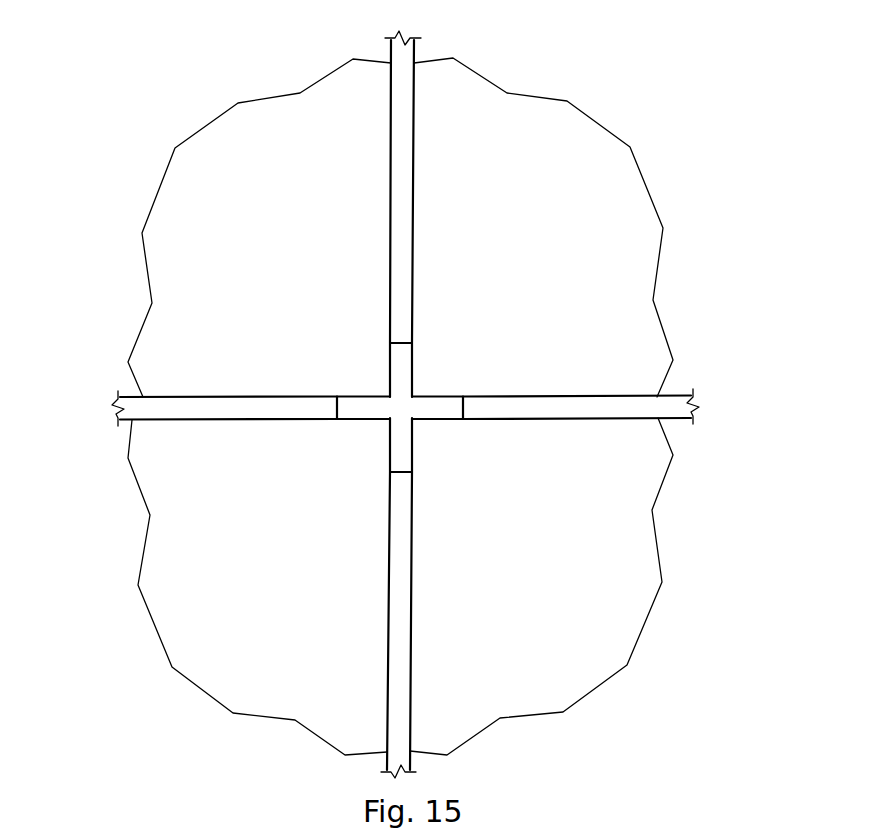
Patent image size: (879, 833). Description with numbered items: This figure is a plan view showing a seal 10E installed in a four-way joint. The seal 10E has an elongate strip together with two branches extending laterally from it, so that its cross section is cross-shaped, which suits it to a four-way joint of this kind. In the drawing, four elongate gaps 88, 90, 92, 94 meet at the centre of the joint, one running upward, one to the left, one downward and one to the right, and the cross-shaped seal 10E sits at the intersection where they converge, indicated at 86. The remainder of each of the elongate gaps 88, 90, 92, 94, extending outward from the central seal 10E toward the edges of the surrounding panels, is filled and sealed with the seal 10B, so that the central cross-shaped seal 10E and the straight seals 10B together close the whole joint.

The seal 10B is at (423, 238).
The seal 10E is at (432, 438).
The central hub of connector 86 is at (437, 388).
The elongate gap 88 is at (414, 145).
The elongate gap 90 is at (178, 397).
The elongate gap 92 is at (387, 566).
The elongate gap 94 is at (601, 397).